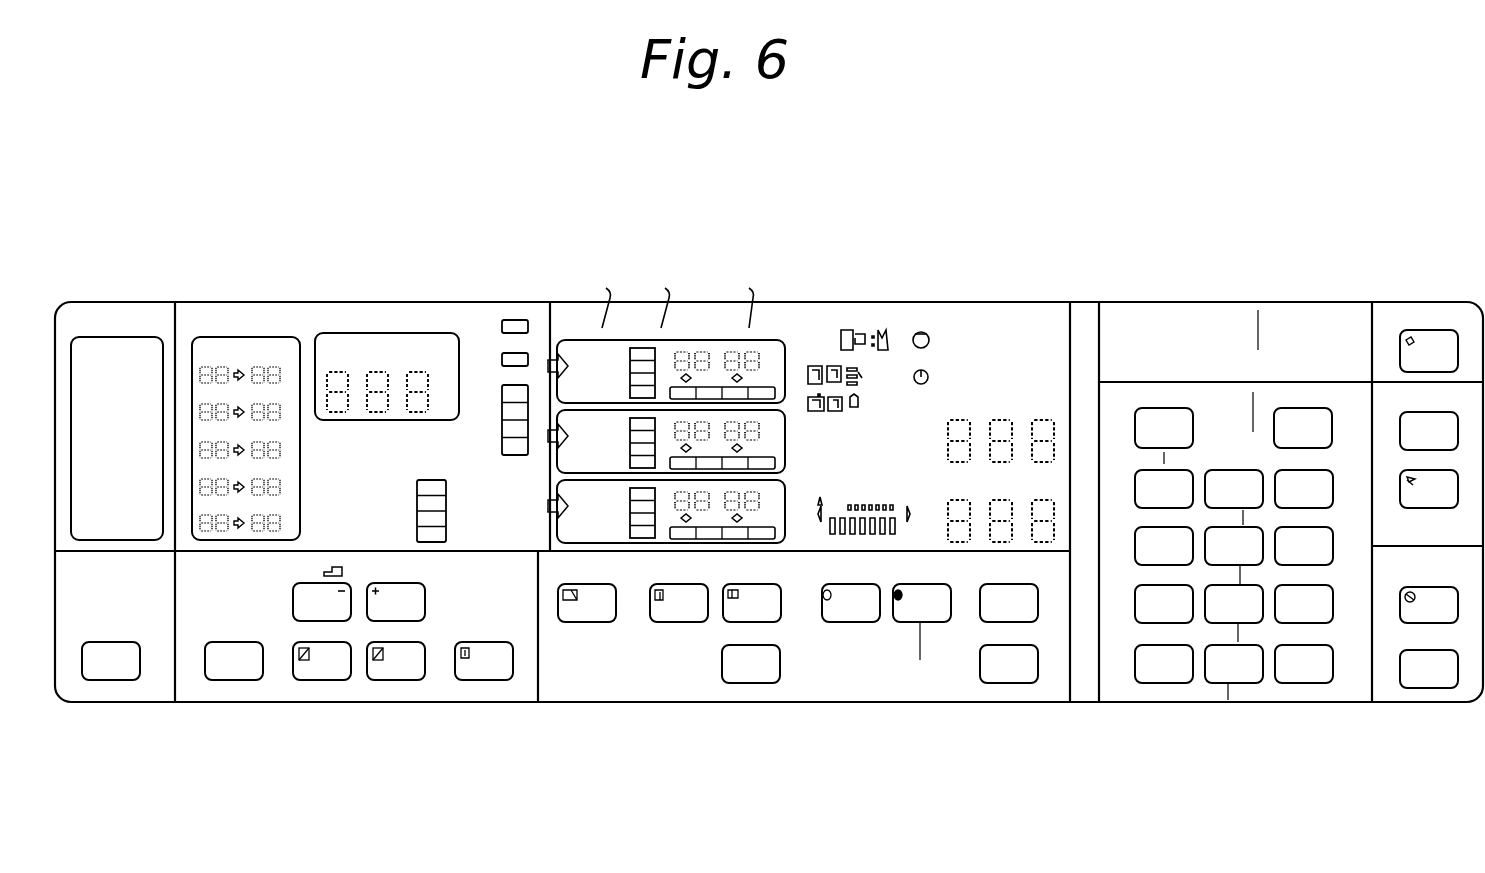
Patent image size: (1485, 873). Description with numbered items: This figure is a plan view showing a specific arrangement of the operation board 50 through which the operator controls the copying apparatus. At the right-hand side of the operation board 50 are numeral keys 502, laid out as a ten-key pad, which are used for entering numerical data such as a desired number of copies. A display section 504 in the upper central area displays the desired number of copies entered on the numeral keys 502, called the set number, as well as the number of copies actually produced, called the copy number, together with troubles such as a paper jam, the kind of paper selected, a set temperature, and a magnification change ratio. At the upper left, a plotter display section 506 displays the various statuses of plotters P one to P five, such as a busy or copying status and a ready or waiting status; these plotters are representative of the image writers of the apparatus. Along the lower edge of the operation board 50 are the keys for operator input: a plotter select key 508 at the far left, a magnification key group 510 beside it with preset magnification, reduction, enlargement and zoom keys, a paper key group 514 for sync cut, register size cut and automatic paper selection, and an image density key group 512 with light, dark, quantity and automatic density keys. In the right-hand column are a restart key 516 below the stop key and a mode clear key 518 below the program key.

The operation board 50 is at (769, 455).
The numeral keys 502 is at (1224, 552).
The display section 504 is at (885, 315).
The plotter display section 506 is at (299, 385).
The plotter select key 508 is at (117, 672).
The magnification key group 510 is at (505, 705).
The image density key group 512 is at (1038, 705).
The paper key group 514 is at (795, 705).
The restart key 516 is at (1422, 690).
The mode clear key 518 is at (1402, 416).